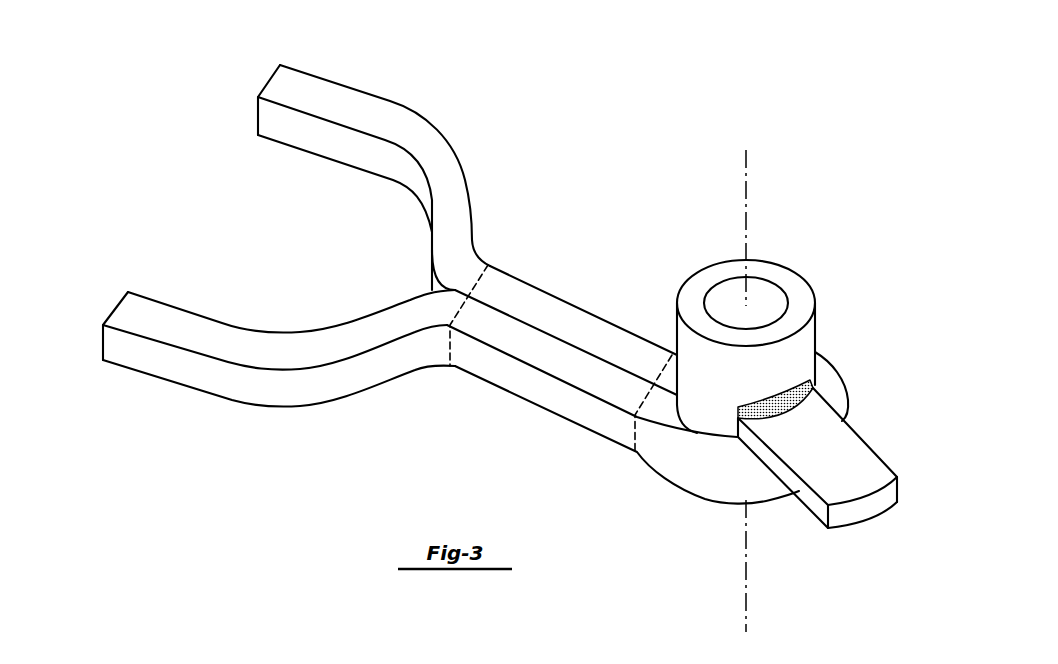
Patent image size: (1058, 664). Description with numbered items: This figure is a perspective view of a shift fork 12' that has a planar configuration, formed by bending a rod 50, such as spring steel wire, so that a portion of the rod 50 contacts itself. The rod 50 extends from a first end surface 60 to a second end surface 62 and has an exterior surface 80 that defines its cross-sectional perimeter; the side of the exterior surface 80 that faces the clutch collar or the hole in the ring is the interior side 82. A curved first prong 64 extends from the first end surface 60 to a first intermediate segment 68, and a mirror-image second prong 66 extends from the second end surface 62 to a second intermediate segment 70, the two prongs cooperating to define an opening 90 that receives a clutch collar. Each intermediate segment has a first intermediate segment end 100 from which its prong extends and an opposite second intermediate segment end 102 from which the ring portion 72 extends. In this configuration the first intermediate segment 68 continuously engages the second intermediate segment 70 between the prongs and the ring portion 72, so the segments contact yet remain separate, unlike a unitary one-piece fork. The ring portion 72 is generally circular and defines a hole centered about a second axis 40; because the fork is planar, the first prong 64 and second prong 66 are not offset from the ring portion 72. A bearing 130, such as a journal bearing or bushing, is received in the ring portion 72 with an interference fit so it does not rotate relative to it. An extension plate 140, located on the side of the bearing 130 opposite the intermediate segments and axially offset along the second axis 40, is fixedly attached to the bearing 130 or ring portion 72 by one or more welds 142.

The shift fork 12' is at (489, 269).
The second axis 40 is at (743, 573).
The rod 50 is at (280, 64).
The first end surface 60 is at (102, 343).
The second end surface 62 is at (257, 115).
The first prong 64 is at (288, 406).
The second prong 66 is at (393, 101).
The first intermediate segment 68 is at (537, 405).
The second intermediate segment 70 is at (568, 302).
The ring portion 72 is at (829, 362).
The exterior surface 80 is at (128, 292).
The interior side 82 is at (330, 137).
The opening 90 is at (224, 194).
The first intermediate segment end 100 is at (505, 275).
The second intermediate segment end 102 is at (660, 350).
The bearing 130 is at (777, 263).
The extension plate 140 is at (897, 478).
The weld 142 is at (806, 410).